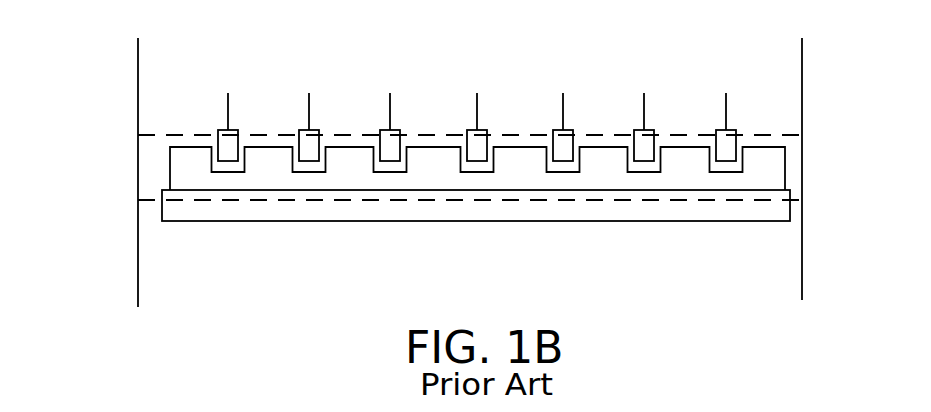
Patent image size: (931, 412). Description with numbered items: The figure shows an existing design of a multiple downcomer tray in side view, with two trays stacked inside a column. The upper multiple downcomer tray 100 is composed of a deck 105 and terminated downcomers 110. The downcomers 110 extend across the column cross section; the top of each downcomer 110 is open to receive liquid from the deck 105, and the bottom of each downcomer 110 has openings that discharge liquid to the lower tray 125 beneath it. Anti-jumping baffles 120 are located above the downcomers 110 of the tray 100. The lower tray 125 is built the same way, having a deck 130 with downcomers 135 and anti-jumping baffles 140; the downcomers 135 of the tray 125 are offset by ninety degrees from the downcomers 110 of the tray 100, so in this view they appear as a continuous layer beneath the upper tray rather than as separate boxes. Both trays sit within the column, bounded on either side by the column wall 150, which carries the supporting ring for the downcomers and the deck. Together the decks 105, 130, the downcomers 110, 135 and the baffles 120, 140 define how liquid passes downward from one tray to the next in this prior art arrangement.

The multiple downcomer tray 100 is at (118, 116).
The deck 105 is at (192, 135).
The terminated downcomers 110 is at (236, 130).
The anti-jumping baffles 120 is at (727, 104).
The lower tray 125 is at (120, 192).
The deck 130 is at (148, 202).
The downcomers 135 is at (753, 207).
The anti-jumping baffles 140 is at (767, 175).
The column wall 150 is at (803, 72).